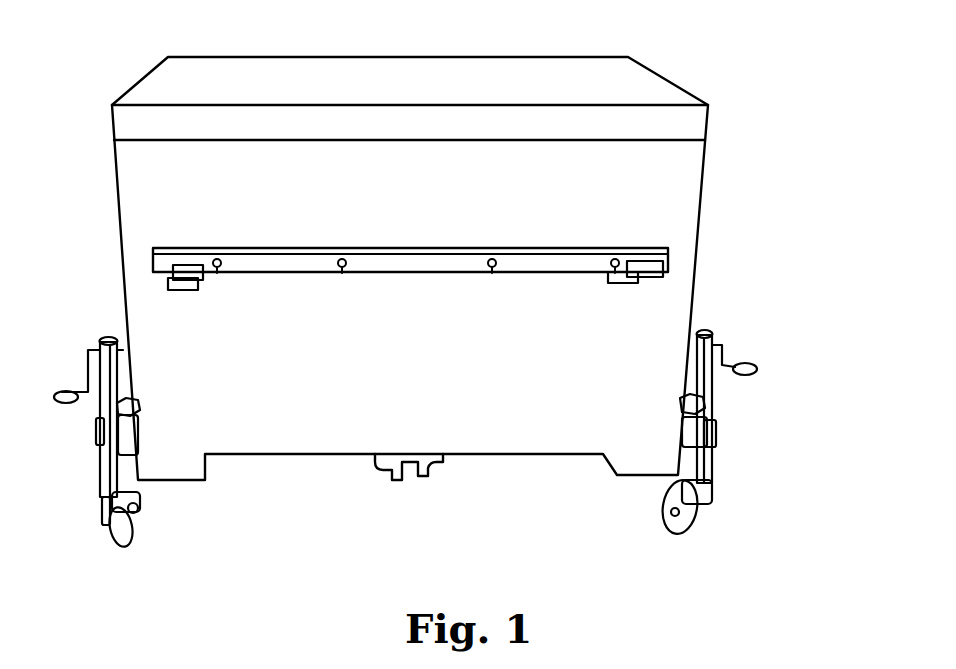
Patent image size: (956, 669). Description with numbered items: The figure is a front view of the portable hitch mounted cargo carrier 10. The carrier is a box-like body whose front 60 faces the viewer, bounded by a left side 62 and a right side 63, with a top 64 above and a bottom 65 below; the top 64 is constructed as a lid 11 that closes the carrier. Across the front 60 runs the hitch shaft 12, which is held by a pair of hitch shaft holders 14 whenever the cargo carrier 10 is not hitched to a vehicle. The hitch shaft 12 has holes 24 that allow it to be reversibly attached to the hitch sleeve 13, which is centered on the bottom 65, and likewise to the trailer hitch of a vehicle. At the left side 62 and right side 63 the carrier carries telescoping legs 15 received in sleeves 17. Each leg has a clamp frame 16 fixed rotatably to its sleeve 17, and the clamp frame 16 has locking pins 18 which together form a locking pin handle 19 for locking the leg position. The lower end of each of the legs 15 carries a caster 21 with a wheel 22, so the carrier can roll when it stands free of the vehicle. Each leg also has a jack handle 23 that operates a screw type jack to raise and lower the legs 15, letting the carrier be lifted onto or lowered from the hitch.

The cargo carrier 10 is at (777, 162).
The lid 11 is at (407, 89).
The hitch shaft 12 is at (405, 246).
The hitch sleeve 13 is at (412, 488).
The hitch shaft holders 14 is at (183, 292).
The telescoping legs 15 is at (94, 479).
The clamp frame 16 is at (128, 405).
The sleeve 17 is at (132, 432).
The locking pins 18 is at (688, 444).
The locking pin handle 19 is at (97, 432).
The casters 21 is at (142, 501).
The wheels 22 is at (134, 530).
The jack handle 23 is at (70, 390).
The holes 24 is at (416, 291).
The front 60 is at (685, 190).
The left side 62 is at (121, 243).
The right side 63 is at (700, 275).
The top 64 is at (640, 61).
The bottom 65 is at (262, 458).